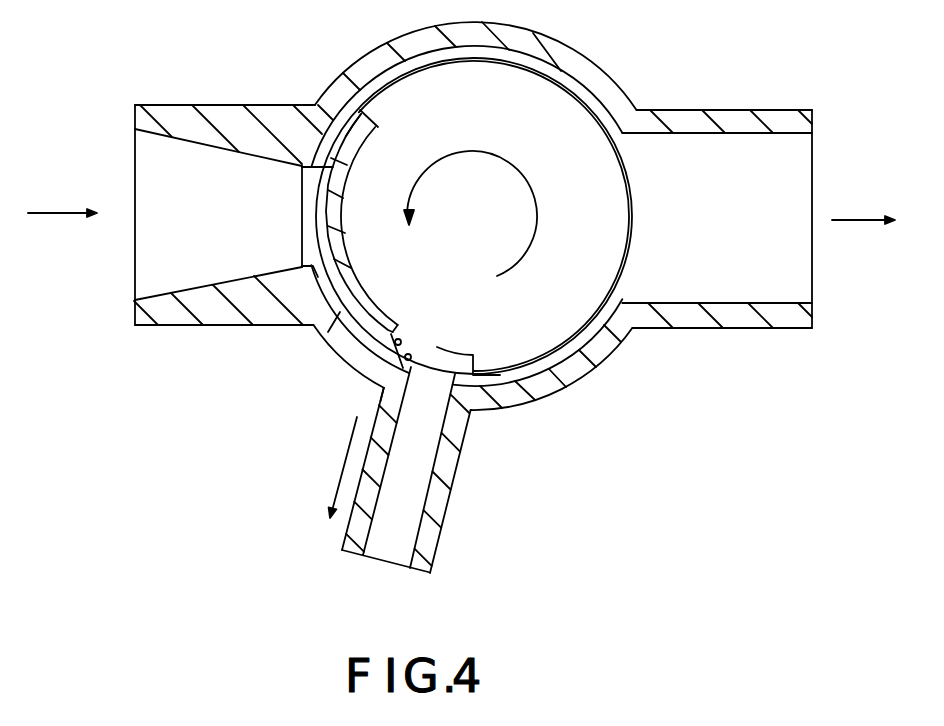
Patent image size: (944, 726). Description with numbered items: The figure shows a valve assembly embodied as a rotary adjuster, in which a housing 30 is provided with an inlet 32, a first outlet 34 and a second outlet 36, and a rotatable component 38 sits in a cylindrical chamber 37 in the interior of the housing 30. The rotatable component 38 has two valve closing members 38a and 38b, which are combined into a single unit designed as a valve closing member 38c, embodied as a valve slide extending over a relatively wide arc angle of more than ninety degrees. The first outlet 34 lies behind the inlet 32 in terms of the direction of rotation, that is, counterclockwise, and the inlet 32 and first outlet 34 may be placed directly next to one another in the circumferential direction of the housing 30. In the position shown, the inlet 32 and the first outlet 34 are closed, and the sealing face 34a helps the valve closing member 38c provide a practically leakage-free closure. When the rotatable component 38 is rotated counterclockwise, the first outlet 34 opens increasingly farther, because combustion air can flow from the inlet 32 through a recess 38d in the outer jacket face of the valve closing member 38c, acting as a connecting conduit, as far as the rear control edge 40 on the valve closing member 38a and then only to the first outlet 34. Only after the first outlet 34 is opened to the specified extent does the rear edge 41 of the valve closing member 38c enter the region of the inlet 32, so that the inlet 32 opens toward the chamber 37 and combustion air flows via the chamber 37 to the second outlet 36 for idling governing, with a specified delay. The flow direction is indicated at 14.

The flow direction arrow 14 is at (282, 360).
The housing 30 is at (591, 381).
The inlet 32 is at (157, 297).
The first outlet 34 is at (410, 550).
The sealing face 34a is at (437, 347).
The second outlet 36 is at (790, 303).
The cylindrical chamber 37 is at (612, 124).
The rotatable component 38 is at (591, 295).
The valve closing member 38a is at (460, 368).
The valve closing member 38b is at (335, 142).
The valve closing member 38c is at (371, 309).
The recess 38d is at (331, 266).
The rear control edge 40 is at (401, 334).
The rear edge 41 is at (380, 121).